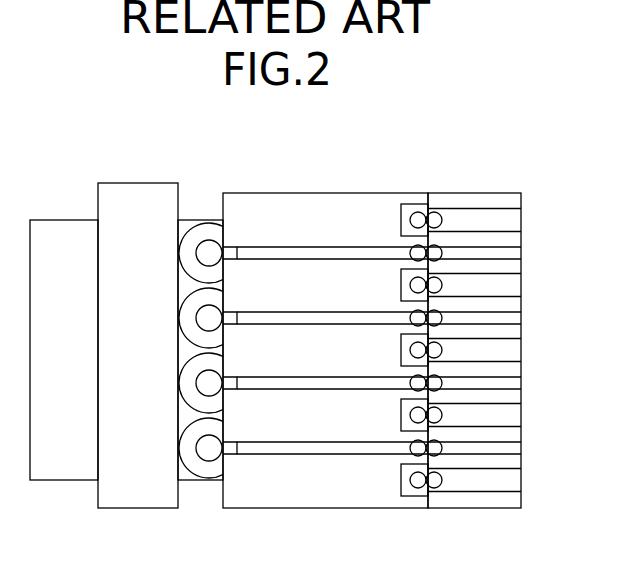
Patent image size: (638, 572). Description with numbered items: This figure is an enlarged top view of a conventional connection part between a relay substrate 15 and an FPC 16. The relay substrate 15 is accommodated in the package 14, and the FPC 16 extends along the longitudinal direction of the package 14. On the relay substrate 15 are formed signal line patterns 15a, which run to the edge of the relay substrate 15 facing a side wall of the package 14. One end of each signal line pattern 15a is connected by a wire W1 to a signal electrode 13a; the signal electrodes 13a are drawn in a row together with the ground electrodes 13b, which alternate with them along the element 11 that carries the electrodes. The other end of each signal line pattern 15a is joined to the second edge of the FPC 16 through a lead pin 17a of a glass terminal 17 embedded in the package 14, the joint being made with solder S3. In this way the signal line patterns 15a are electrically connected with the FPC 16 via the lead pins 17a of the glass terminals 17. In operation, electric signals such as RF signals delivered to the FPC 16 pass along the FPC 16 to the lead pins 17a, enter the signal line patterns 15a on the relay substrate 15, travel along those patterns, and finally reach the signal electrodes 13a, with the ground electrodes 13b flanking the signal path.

The circuit board 11 is at (477, 508).
The signal electrode 13a is at (512, 255).
The ground electrode 13b is at (512, 223).
The package 14 is at (138, 508).
The relay substrate 15 is at (323, 508).
The signal line pattern 15a is at (355, 249).
The FPC 16 is at (70, 480).
The glass terminal 17 is at (212, 228).
The lead pin 17a is at (205, 253).
The solder S3 is at (228, 250).
The wire W1 is at (443, 251).